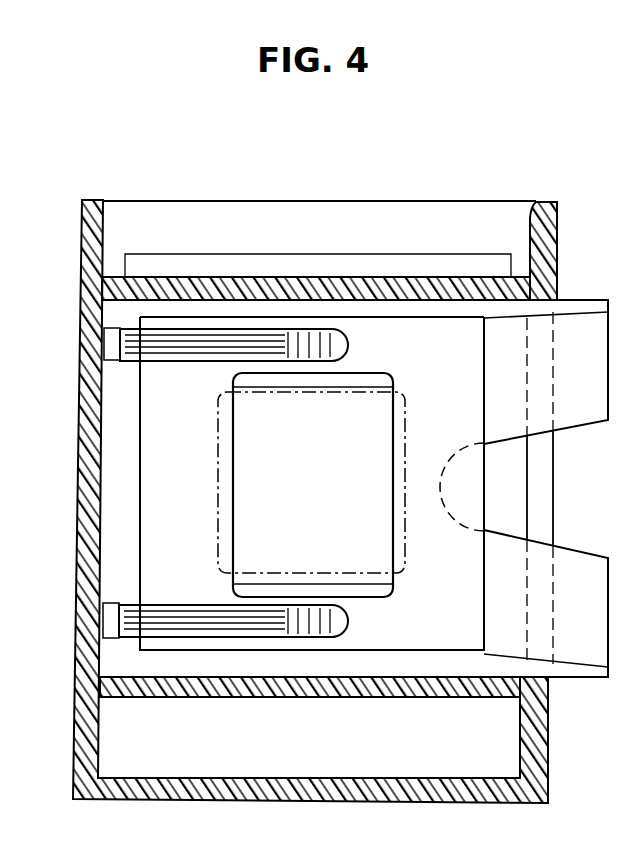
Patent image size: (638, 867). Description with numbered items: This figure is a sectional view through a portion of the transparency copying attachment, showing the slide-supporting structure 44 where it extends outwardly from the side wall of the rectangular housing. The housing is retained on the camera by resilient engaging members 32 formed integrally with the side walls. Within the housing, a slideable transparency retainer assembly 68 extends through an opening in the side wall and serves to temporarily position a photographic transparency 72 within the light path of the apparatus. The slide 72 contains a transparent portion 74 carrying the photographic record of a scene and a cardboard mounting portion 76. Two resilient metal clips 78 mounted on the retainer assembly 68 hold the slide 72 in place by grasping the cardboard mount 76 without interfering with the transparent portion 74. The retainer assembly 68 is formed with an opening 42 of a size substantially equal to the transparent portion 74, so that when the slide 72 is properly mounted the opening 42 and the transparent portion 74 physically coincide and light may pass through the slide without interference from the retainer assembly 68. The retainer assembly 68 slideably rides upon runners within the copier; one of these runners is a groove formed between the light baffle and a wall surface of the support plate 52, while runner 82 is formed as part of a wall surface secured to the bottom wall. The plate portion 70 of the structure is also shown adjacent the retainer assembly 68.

The resilient engaging member 32 is at (281, 429).
The support plate 52 is at (492, 287).
The runner 82 is at (505, 688).
The photographic transparency 72 is at (428, 314).
The cardboard mounting portion 76 is at (362, 352).
The transparency retainer assembly 68 is at (590, 352).
The lower flange plate 70 is at (540, 515).
The slide-supporting structure 44 is at (564, 474).
The opening 42 is at (405, 422).
The transparent portion 74 is at (372, 569).
The resilient metal clip 78 is at (133, 350).